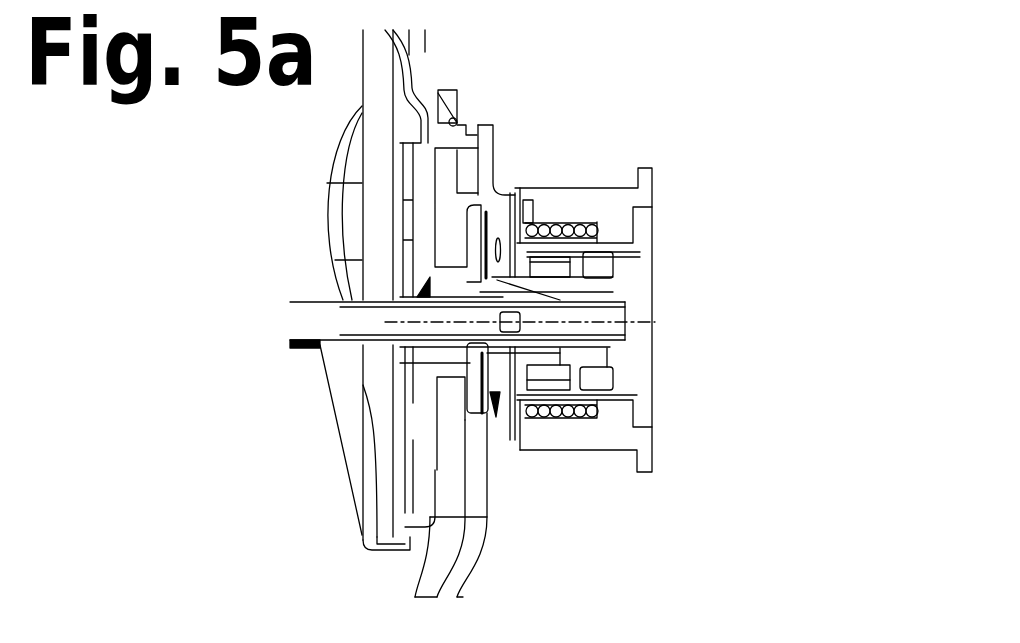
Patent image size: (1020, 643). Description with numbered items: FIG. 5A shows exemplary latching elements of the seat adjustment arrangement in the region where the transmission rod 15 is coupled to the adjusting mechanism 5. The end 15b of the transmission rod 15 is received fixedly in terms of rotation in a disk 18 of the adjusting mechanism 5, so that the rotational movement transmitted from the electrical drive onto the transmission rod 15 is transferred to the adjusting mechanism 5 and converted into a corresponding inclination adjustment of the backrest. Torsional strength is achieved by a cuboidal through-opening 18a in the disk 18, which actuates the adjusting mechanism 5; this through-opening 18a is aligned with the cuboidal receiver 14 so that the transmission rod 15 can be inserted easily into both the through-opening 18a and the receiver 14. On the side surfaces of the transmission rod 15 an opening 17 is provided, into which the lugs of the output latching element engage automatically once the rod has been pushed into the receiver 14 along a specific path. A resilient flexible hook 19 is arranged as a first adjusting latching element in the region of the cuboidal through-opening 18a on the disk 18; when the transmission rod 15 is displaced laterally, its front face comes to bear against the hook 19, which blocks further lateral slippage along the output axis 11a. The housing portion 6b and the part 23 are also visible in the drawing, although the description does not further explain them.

The adjusting mechanism 5 is at (505, 163).
The housing 6b is at (645, 170).
The transmission rod 15 is at (293, 302).
The end of the transmission rod 15b is at (636, 337).
The output axis 11a is at (652, 322).
The opening 17 is at (532, 302).
The resilient flexible hook 19 is at (508, 301).
The cuboidal receiver 14 is at (588, 352).
The cuboidal through-opening 18a is at (465, 350).
The disk 18 is at (478, 408).
The spring 23 is at (567, 362).